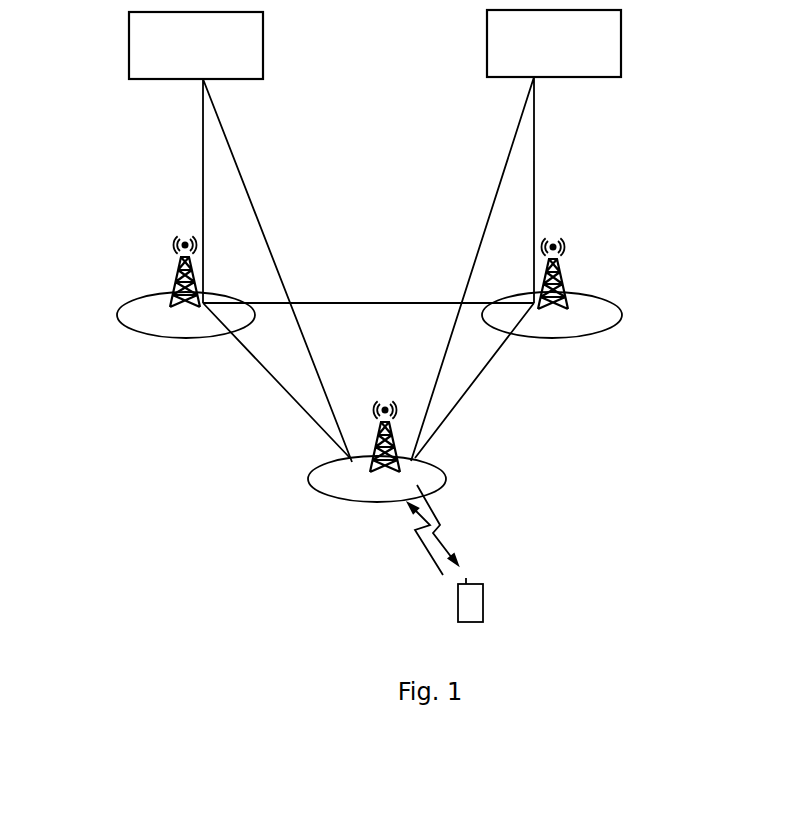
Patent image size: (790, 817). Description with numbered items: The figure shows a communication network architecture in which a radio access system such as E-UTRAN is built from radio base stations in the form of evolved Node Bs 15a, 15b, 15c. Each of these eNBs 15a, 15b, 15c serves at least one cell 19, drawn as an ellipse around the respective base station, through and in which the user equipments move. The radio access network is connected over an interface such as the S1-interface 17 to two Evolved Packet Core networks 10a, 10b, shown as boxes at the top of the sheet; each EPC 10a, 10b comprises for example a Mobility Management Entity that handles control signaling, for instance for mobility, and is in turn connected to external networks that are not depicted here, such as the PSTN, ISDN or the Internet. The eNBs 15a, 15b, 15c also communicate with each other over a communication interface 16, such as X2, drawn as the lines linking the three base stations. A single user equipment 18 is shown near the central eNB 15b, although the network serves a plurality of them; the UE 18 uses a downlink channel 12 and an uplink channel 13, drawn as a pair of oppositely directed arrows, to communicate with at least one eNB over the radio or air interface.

The Evolved Packet Core network 10a is at (196, 45).
The Evolved Packet Core network 10b is at (554, 43).
The downlink channel 12 is at (430, 507).
The uplink channel 13 is at (427, 558).
The evolved Node B 15a is at (176, 270).
The evolved Node B 15b is at (372, 473).
The evolved Node B 15c is at (565, 265).
The communication interface 16 is at (350, 303).
The S1-interface 17 is at (203, 166).
The user equipment 18 is at (483, 598).
The cell 19 is at (118, 308).